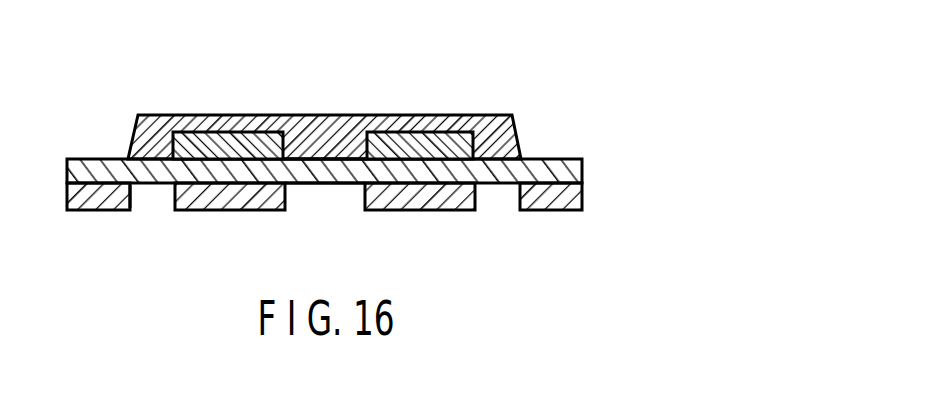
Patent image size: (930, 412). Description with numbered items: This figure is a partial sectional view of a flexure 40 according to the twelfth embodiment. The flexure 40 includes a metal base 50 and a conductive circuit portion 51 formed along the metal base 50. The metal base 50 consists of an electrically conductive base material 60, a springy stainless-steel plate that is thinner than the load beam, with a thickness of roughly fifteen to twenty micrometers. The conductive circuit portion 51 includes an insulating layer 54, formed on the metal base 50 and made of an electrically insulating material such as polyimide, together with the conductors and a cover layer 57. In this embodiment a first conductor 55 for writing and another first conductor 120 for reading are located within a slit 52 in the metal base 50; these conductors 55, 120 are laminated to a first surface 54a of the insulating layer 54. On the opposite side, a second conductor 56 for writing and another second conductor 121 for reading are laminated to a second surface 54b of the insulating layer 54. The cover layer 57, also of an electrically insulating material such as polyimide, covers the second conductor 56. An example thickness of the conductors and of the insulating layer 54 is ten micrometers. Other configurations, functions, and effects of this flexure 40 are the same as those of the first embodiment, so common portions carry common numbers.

The flexure 40 is at (349, 151).
The conductive circuit portion 51 is at (275, 94).
The cover layer 57 is at (171, 114).
The second conductor 56 is at (213, 132).
The second conductor for reading 121 is at (423, 132).
The insulating layer 54 is at (324, 161).
The first surface of insulating layer 54a is at (315, 185).
The second surface of insulating layer 54b is at (320, 135).
The metal base 50 is at (102, 205).
The slit 52 is at (130, 199).
The first conductor 55 is at (217, 205).
The first conductor for reading 120 is at (425, 200).
The base material 60 is at (557, 198).